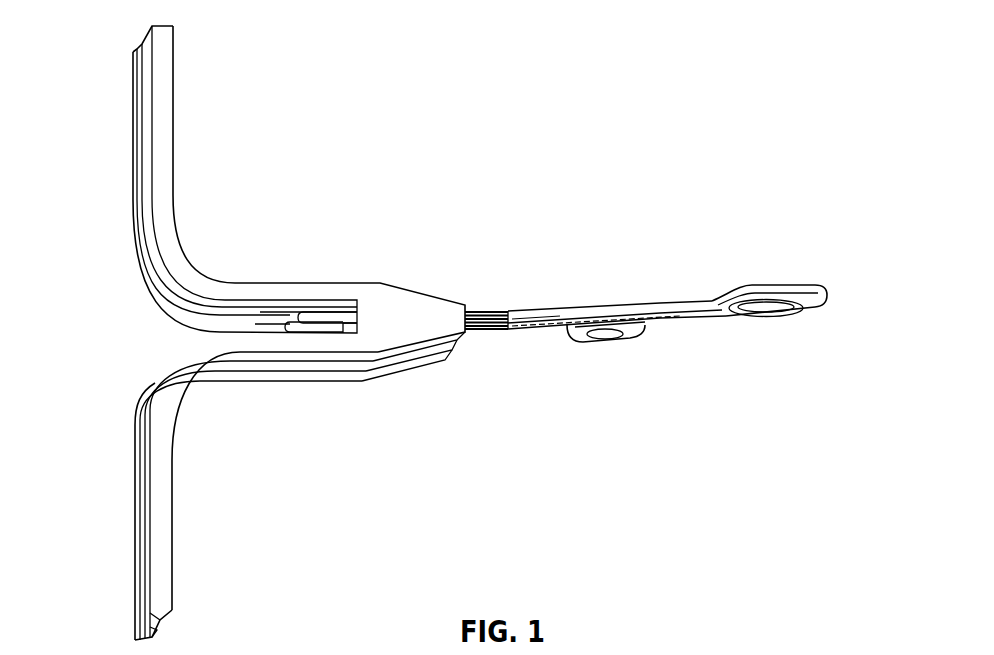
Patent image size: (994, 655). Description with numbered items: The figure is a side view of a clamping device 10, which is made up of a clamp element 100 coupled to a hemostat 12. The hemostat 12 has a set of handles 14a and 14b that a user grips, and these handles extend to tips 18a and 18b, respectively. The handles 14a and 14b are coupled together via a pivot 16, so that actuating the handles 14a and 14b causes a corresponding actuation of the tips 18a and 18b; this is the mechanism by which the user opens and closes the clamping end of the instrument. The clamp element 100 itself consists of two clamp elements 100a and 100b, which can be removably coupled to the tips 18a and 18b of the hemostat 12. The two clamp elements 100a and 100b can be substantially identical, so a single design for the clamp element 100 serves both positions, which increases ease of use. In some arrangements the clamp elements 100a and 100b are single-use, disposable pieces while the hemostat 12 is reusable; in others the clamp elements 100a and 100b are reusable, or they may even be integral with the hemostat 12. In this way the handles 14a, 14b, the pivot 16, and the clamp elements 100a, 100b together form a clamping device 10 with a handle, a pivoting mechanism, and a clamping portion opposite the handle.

The clamping device 10 is at (573, 86).
The hemostat 12 is at (596, 295).
The handle 14a is at (812, 308).
The handle 14b is at (636, 342).
The pivot 16 is at (483, 329).
The tip 18a is at (305, 327).
The tip 18b is at (323, 315).
The clamp element 100 is at (204, 339).
The clamp element 100a is at (132, 618).
The clamp element 100b is at (166, 220).